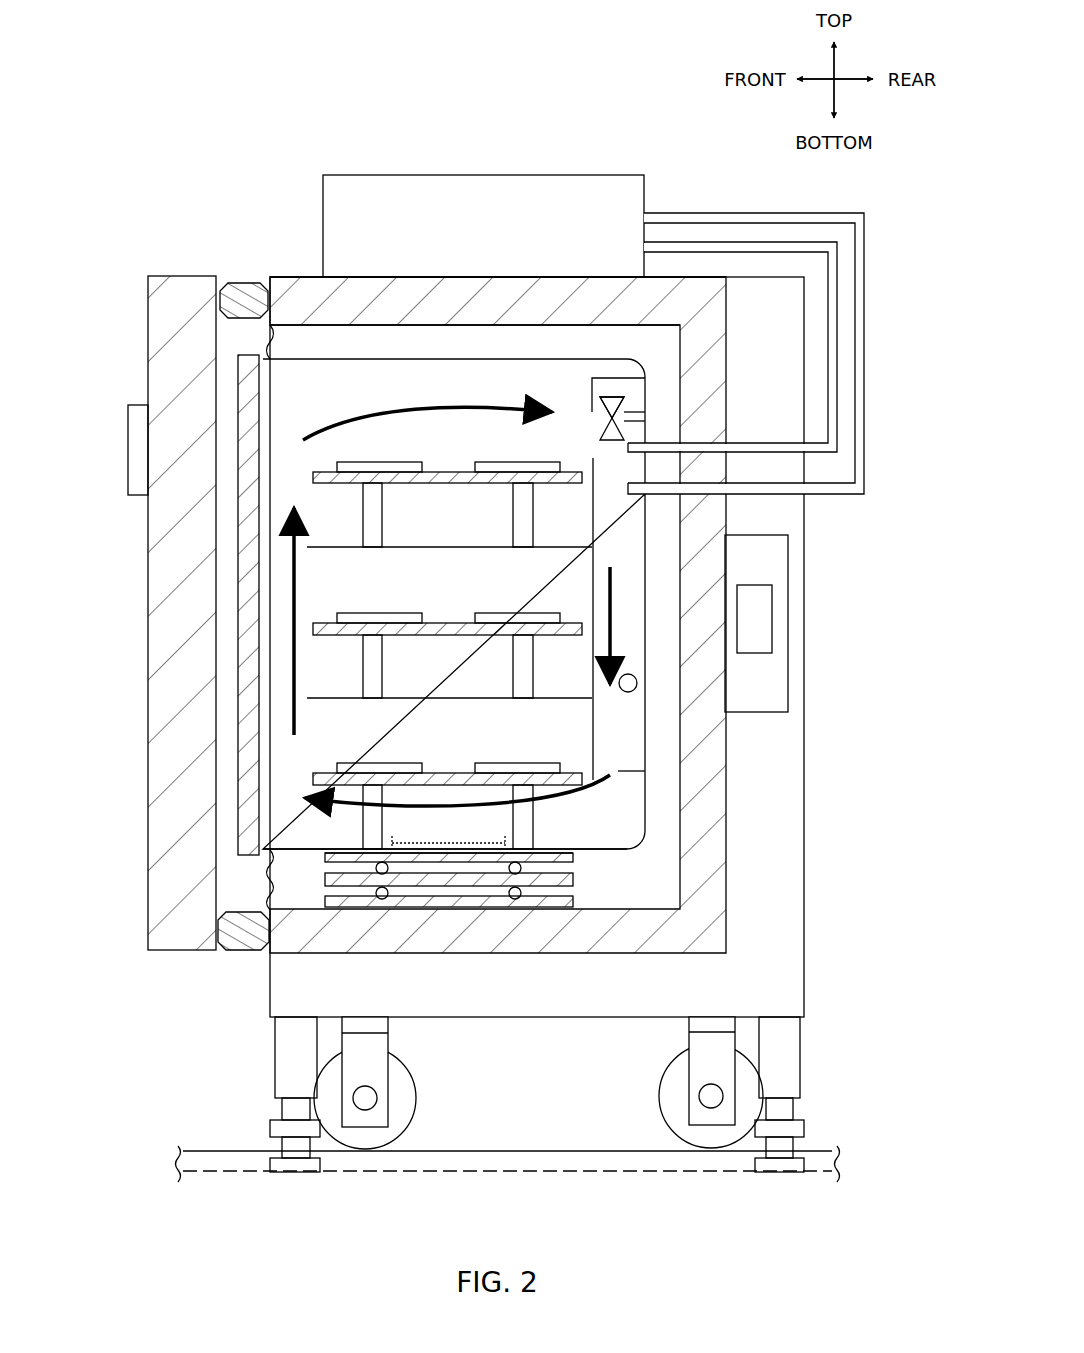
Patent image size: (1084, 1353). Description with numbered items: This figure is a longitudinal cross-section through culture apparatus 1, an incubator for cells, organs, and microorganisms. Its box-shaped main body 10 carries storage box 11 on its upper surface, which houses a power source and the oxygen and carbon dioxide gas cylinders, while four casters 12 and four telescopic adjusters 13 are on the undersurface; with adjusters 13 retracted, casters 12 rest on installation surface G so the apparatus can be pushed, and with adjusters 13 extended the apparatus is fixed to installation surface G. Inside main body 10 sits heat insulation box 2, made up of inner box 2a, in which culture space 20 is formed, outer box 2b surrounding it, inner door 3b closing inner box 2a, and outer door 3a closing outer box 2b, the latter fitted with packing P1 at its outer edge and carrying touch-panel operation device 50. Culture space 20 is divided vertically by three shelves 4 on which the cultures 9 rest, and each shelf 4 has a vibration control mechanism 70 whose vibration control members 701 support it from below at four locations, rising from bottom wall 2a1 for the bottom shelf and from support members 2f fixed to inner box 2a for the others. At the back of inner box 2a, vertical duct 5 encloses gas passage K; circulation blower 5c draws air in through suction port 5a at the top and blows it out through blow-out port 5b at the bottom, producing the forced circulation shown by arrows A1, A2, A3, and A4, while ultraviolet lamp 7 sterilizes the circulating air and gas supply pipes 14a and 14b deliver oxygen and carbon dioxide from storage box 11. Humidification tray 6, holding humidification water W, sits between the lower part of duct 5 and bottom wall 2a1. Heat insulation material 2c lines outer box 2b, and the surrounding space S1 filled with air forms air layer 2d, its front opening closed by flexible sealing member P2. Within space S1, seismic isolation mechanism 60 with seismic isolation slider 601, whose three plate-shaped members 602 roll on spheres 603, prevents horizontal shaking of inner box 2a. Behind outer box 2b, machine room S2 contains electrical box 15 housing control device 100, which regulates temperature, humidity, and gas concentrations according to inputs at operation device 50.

The culture apparatus 1 is at (167, 103).
The heat insulation box 2 is at (748, 508).
The inner box 2a is at (393, 362).
The bottom wall 2a1 is at (605, 847).
The outer box 2b is at (390, 277).
The heat insulation material 2c is at (445, 290).
The air layer 2d is at (497, 340).
The support member 2f is at (568, 549).
The outer door 3a is at (148, 560).
The inner door 3b is at (238, 605).
The shelf 4 is at (440, 472).
The duct 5 is at (593, 460).
The suction port 5a is at (587, 425).
The blow-out port 5b is at (618, 771).
The circulation blower 5c is at (614, 395).
The humidification tray 6 is at (505, 845).
The ultraviolet lamp 7 is at (626, 692).
The workpiece 9 is at (388, 462).
The main body 10 is at (777, 353).
The storage box 11 is at (440, 175).
The caster 12 is at (422, 1105).
The adjuster 13 is at (268, 1063).
The gas supply pipe 14a is at (838, 392).
The gas supply pipe 14b is at (863, 428).
The electrical box 15 is at (788, 688).
The culture space 20 is at (431, 391).
The operation device 50 is at (128, 432).
The seismic isolation mechanism 60 is at (597, 876).
The vibration control mechanism 70 is at (433, 637).
The control device 100 is at (772, 612).
The seismic isolation slider 601 is at (594, 898).
The plate-shaped member 602 is at (535, 858).
The sphere 603 is at (378, 873).
The vibration control member 701 is at (363, 540).
The arrow A1 is at (393, 405).
The arrow A2 is at (613, 592).
The arrow A3 is at (462, 800).
The arrow A4 is at (296, 605).
The installation surface G is at (232, 1152).
The gas passage K is at (600, 523).
The packing P1 is at (240, 285).
The sealing member P2 is at (268, 878).
The space S1 is at (651, 559).
The machine room S2 is at (755, 768).
The humidification water W is at (452, 843).